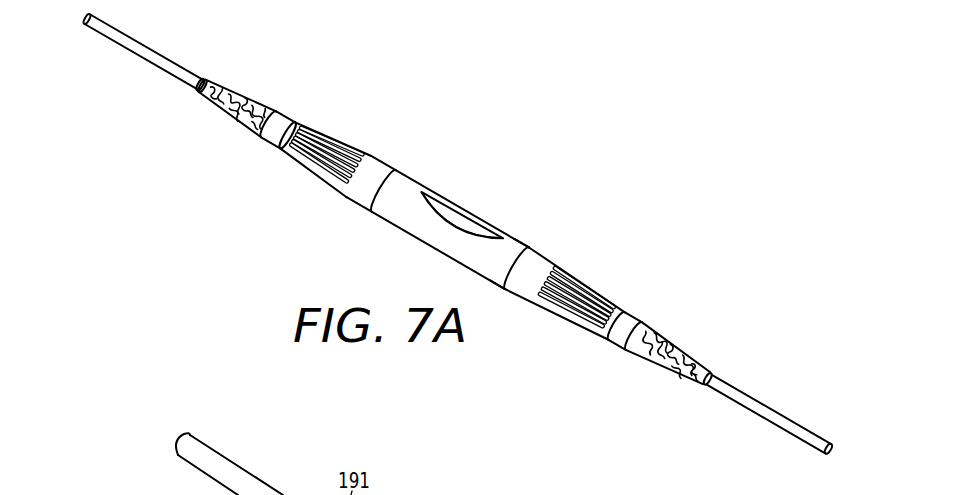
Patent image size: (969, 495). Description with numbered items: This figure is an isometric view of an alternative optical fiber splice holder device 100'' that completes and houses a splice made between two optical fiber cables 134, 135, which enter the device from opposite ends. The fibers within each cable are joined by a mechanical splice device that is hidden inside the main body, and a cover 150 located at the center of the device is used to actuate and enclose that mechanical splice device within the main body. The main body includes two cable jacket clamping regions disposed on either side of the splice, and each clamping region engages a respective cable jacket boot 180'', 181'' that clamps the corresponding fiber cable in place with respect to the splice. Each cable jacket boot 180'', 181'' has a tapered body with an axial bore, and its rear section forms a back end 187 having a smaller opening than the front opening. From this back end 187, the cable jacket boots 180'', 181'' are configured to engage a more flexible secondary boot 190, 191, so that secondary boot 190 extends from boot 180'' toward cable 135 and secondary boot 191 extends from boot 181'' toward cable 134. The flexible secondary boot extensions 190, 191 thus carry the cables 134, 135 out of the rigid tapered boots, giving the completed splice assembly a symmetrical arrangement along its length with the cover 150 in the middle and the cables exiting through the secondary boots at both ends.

The optical fiber splice holder device 100'' is at (485, 247).
The optical fiber cable 134 is at (148, 63).
The optical fiber cable 135 is at (765, 424).
The cover 150 is at (515, 238).
The cable jacket boot 180'' is at (583, 268).
The cable jacket boot 181'' is at (450, 189).
The back end of the boot 187 is at (303, 118).
The secondary boot 190 is at (681, 343).
The secondary boot 191 is at (243, 97).